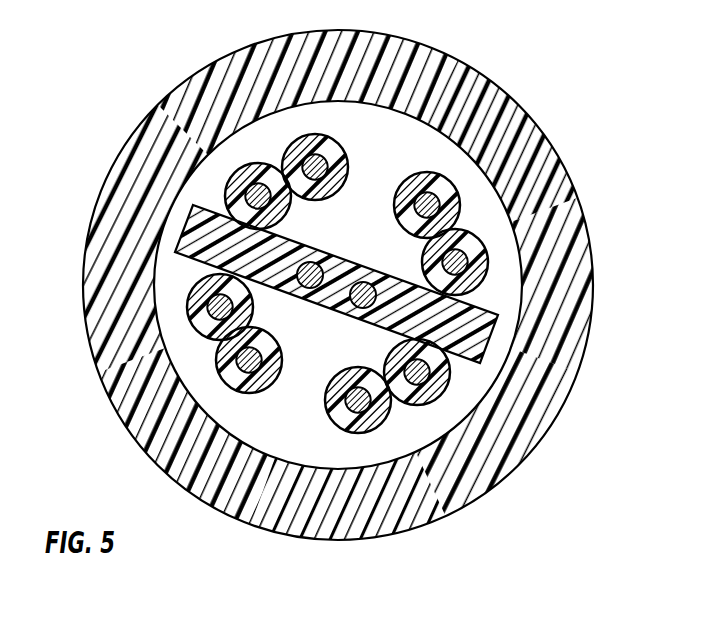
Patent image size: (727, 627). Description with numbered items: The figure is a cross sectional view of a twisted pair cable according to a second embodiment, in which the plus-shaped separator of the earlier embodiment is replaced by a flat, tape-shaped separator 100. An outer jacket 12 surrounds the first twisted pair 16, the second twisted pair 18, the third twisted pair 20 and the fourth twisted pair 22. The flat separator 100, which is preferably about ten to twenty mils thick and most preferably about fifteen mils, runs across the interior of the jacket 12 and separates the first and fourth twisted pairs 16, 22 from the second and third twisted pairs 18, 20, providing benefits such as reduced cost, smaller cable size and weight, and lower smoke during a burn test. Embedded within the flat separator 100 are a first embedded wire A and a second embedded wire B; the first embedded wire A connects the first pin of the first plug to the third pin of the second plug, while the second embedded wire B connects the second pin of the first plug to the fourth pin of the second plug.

The jacket 12 is at (457, 73).
The first twisted pair 16 is at (262, 143).
The second twisted pair 18 is at (201, 358).
The third twisted pair 20 is at (414, 421).
The fourth twisted pair 22 is at (484, 212).
The flat tape separator 100 is at (490, 343).
The first embedded wire A is at (319, 267).
The second embedded wire B is at (372, 287).